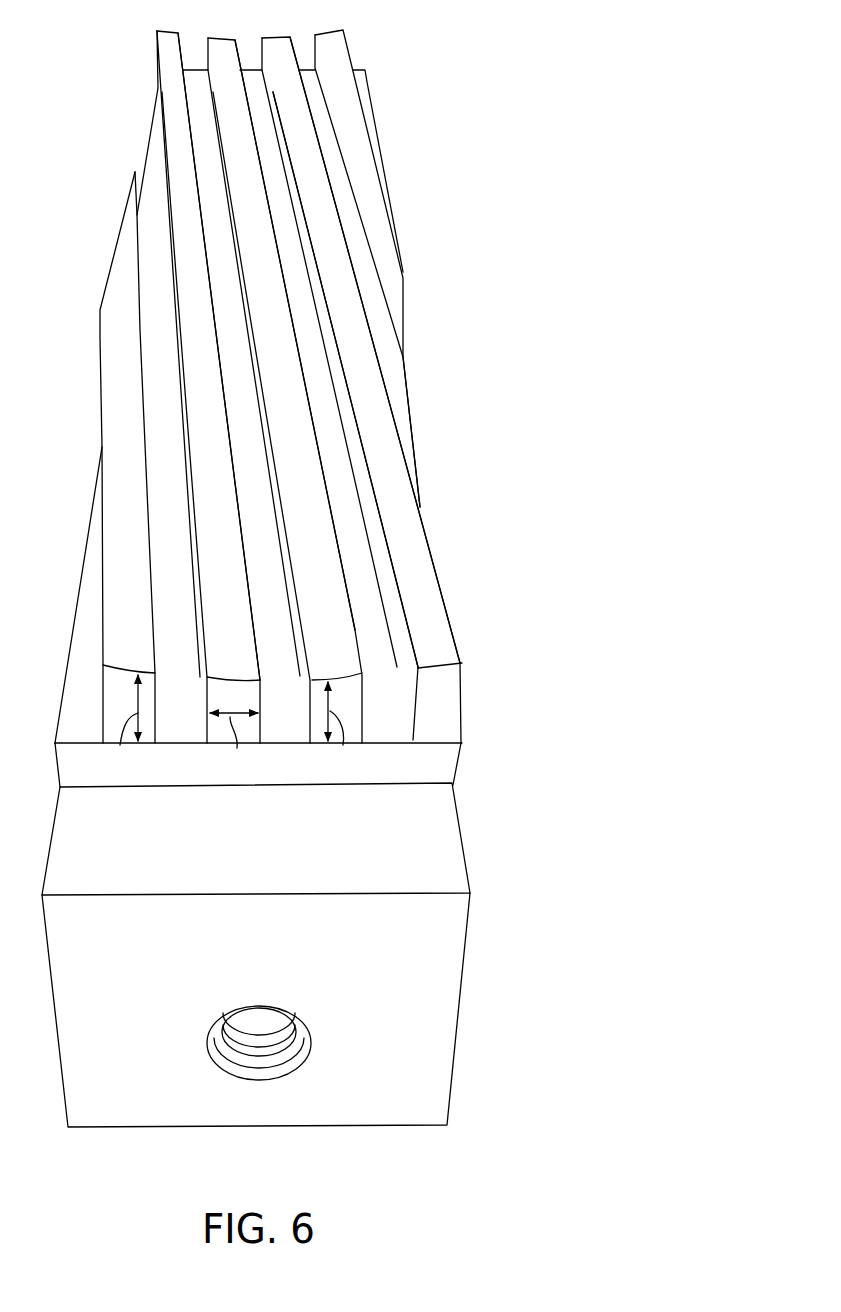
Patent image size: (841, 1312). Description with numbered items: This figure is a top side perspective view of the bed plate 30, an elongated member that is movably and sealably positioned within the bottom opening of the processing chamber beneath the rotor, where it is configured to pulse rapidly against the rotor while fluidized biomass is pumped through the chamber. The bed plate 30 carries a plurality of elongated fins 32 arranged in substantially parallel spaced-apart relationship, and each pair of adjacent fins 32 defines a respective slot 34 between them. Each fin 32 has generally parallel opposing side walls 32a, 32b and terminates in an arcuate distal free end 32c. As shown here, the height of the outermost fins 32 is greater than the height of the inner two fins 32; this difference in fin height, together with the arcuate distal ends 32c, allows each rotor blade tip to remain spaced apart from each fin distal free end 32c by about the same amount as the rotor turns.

The bed plate 30 is at (414, 71).
The elongated fin 32 is at (220, 597).
The side wall 32a is at (439, 573).
The side wall 32b is at (380, 550).
The arcuate distal free end 32c is at (435, 637).
The slot 34 is at (383, 690).